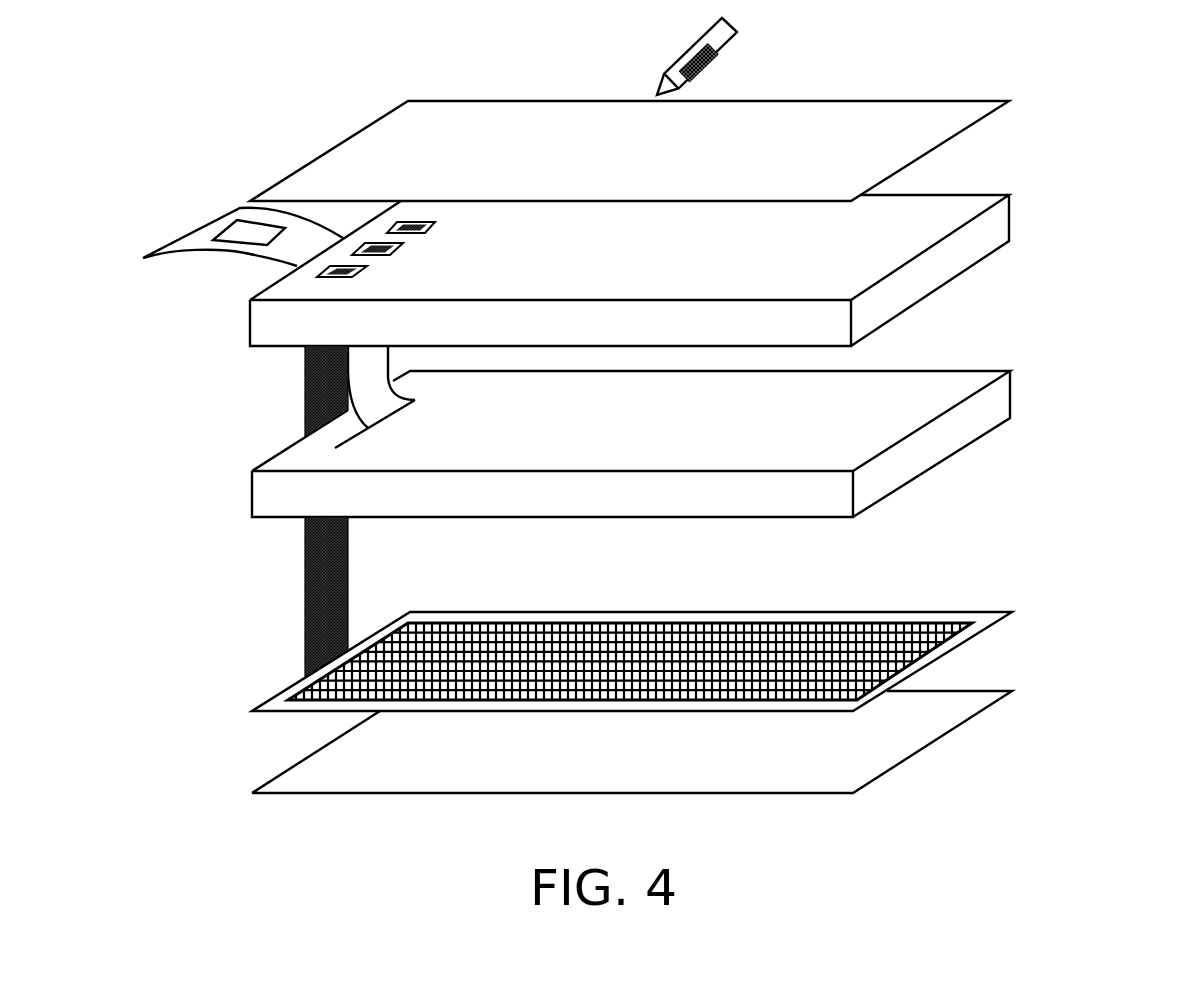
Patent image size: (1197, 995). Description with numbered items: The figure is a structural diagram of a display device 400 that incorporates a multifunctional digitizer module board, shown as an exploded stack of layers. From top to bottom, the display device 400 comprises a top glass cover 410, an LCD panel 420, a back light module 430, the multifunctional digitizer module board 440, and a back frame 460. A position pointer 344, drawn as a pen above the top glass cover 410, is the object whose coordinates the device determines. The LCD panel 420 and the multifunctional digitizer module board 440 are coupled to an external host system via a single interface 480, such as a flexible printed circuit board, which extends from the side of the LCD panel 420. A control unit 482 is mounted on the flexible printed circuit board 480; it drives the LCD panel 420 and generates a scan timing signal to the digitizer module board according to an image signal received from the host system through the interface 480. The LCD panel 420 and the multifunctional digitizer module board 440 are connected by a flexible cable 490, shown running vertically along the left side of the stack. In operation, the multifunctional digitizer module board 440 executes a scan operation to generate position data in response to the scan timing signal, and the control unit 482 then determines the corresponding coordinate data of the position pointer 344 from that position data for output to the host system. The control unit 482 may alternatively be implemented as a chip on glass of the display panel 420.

The position pointer 344 is at (712, 58).
The display device 400 is at (1153, 784).
The top glass cover 410 is at (945, 113).
The LCD panel 420 is at (945, 210).
The back light module 430 is at (947, 387).
The multifunctional digitizer module board 440 is at (947, 615).
The back frame 460 is at (947, 708).
The interface 480 is at (178, 247).
The control unit 482 is at (247, 230).
The flexible cable 490 is at (305, 587).